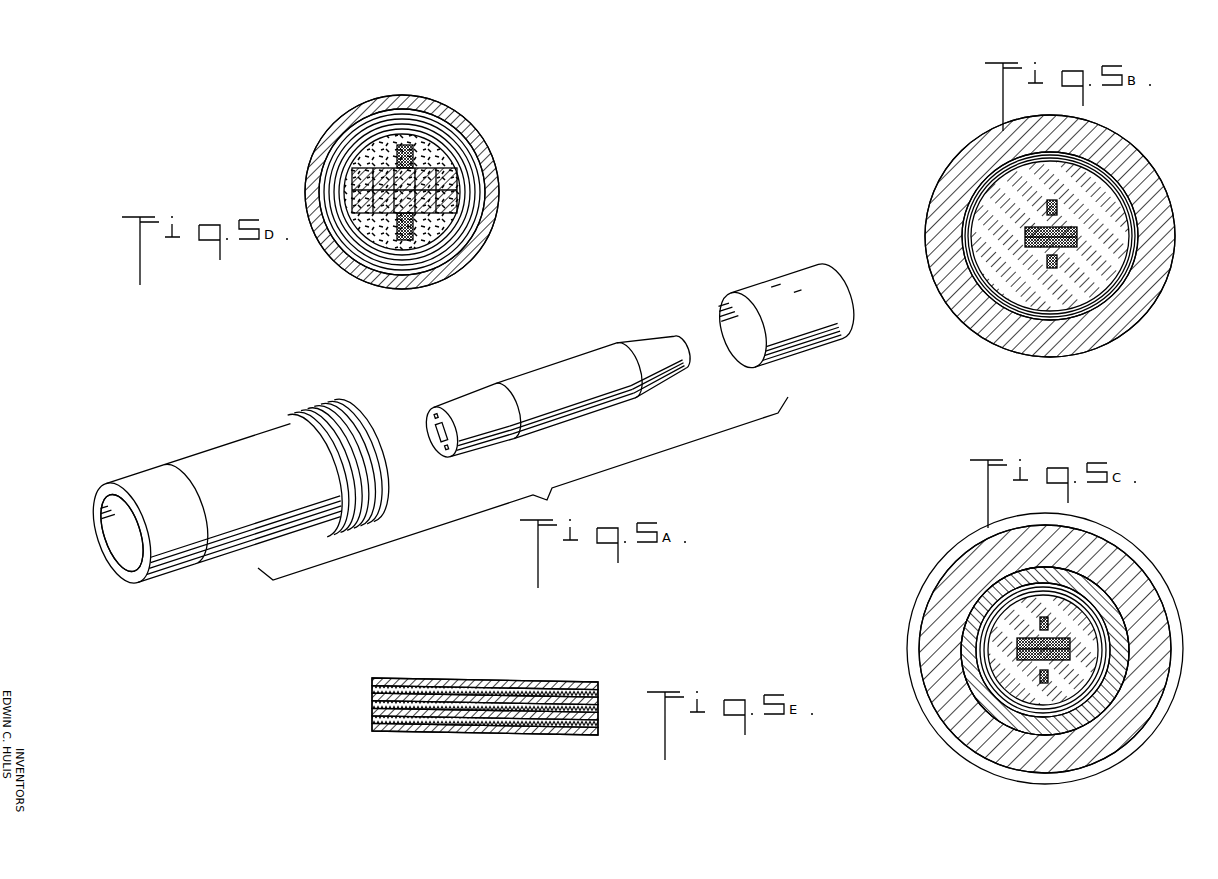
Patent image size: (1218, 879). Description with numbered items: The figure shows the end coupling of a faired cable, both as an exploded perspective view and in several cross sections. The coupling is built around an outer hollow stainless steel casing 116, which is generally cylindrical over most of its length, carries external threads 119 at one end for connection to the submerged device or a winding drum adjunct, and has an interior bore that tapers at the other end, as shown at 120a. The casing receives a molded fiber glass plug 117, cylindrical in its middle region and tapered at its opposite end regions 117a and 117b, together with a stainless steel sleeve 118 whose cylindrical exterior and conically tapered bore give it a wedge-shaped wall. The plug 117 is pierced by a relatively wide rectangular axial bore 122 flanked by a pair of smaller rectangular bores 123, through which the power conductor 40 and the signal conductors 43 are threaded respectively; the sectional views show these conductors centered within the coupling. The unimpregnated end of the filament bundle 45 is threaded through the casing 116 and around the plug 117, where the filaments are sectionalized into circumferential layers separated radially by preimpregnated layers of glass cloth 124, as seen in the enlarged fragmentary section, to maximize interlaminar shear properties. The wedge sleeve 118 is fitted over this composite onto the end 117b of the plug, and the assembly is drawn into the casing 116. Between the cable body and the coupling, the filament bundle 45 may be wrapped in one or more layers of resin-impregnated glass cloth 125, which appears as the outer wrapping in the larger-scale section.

In FIG. 5A, the outer hollow stainless steel casing 116 is at (222, 438).
In FIG. 5B, the outer hollow stainless steel casing 116 is at (953, 166).
In FIG. 5C, the outer hollow stainless steel casing 116 is at (940, 630).
In FIG. 5A, the molded fiber glass plug 117 is at (553, 360).
In FIG. 5B, the molded fiber glass plug 117 is at (1050, 300).
In FIG. 5C, the molded fiber glass plug 117 is at (1065, 680).
In FIG. 5A, the tapered end region of plug 117a is at (465, 395).
In FIG. 5A, the tapered end region of plug 117b is at (657, 338).
In FIG. 5A, the stainless steel sleeve 118 is at (765, 290).
In FIG. 5C, the stainless steel sleeve 118 is at (1002, 728).
In FIG. 5A, the external threads 119 is at (310, 400).
In FIG. 5C, the external threads 119 is at (932, 578).
In FIG. 5A, the tapered portion of bore 120a is at (110, 495).
In FIG. 5A, the rectangular axial bore 122 is at (466, 452).
In FIG. 5A, the rectangular bores 123 is at (440, 408).
In FIG. 5E, the glass cloth 124 is at (372, 712).
In FIG. 5D, the resin-impregnated glass cloth 125 is at (430, 100).
In FIG. 5D, the power conductor 40 is at (467, 180).
In FIG. 5D, the signal conductors 43 is at (417, 148).
In FIG. 5D, the filament bundle 45 is at (322, 150).
In FIG. 5E, the filament bundle 45 is at (534, 690).